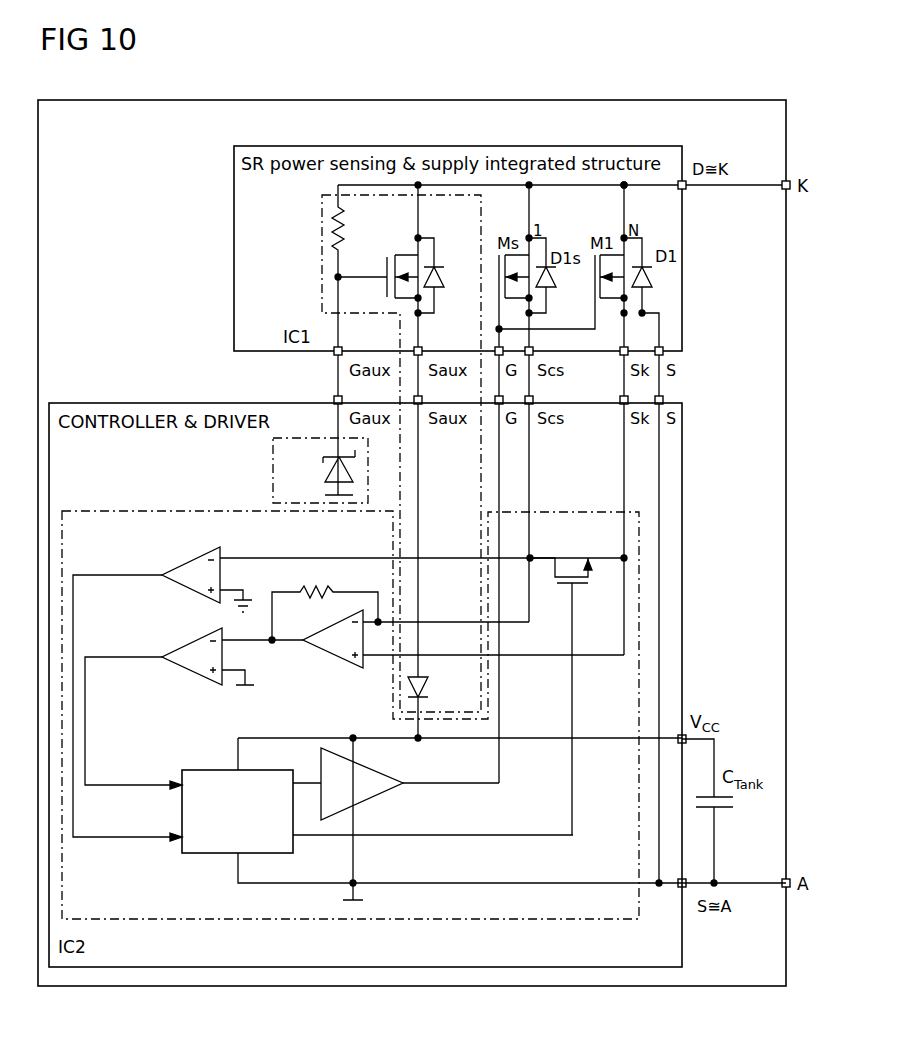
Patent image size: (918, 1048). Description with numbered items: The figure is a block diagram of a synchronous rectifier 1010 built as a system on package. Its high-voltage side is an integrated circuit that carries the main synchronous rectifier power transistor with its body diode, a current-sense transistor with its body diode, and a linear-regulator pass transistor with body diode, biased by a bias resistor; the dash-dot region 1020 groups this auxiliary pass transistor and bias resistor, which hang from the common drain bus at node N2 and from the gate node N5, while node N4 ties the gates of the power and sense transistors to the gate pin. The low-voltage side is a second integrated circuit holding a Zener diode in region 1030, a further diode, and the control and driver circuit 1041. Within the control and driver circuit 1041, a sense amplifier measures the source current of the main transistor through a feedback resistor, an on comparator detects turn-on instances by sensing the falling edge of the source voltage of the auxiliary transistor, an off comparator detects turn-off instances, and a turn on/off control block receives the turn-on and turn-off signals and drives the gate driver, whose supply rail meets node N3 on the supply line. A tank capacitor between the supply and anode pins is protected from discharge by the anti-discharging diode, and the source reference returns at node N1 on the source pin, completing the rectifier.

The synchronous rectifier 1010 is at (420, 99).
The auxiliary transistor and resistor structure 1020 is at (322, 240).
The zener diode DZ1 protection 1030 is at (273, 457).
The control and driver circuit 1041 is at (127, 511).
The node N1 is at (660, 890).
The node N2 is at (627, 188).
The node N3 is at (356, 741).
The node N4 is at (497, 330).
The node N5 is at (338, 277).